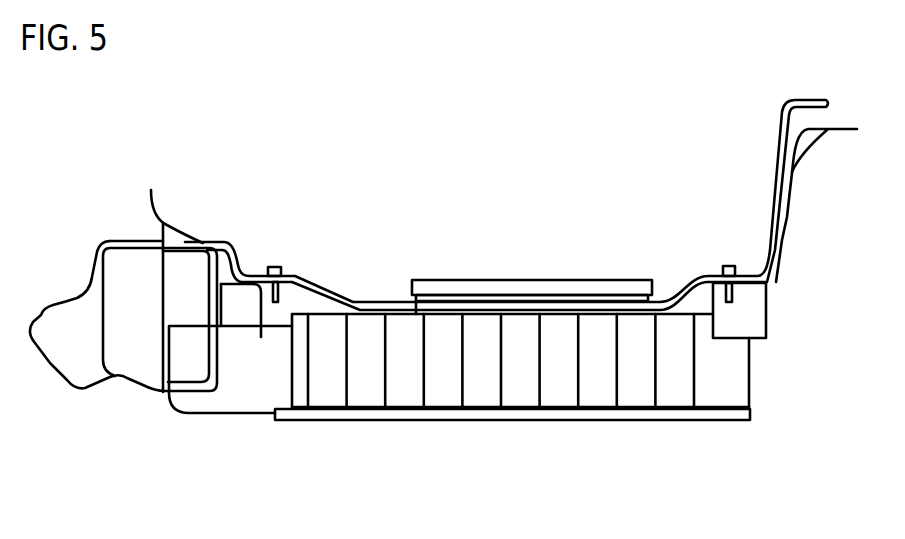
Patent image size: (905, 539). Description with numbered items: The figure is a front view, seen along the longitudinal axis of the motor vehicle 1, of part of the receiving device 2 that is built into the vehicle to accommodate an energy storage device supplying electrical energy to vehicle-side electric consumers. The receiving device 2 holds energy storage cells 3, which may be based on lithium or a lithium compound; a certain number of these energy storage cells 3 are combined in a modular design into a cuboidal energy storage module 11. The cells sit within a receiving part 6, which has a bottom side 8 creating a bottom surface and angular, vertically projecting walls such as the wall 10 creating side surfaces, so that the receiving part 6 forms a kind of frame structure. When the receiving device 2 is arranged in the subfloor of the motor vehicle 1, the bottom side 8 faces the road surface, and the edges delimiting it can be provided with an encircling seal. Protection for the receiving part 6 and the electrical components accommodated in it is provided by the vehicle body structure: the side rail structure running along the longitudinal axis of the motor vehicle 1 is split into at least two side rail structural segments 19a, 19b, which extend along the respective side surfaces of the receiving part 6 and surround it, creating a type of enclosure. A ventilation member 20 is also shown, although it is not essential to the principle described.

The motor vehicle 1 is at (312, 204).
The receiving device 2 is at (792, 378).
The energy storage cells 3 is at (333, 388).
The receiving part 6 is at (402, 438).
The bottom side 8 is at (530, 410).
The wall 10 is at (737, 383).
The energy storage module 11 is at (605, 373).
The side rail structural segment 19a is at (243, 400).
The side rail structural segment 19b is at (755, 315).
The ventilation member 20 is at (638, 294).